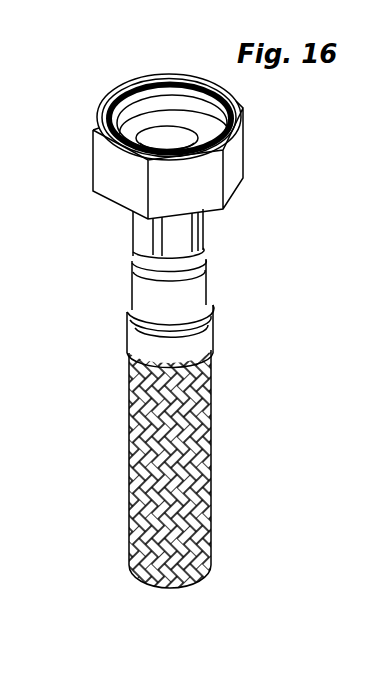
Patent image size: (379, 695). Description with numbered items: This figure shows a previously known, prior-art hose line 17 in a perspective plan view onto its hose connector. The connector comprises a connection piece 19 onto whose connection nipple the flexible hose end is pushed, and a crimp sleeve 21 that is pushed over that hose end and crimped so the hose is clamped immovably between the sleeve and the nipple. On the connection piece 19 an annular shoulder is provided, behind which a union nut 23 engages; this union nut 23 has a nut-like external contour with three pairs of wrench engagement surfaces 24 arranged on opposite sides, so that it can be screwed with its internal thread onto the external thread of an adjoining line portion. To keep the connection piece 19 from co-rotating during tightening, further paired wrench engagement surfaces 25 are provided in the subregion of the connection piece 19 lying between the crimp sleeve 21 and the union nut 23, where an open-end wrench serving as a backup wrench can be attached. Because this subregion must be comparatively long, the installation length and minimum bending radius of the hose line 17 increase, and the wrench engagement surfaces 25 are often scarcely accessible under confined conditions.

The hose line 17 is at (262, 358).
The connection piece 19 is at (168, 231).
The crimp sleeve 21 is at (200, 297).
The union nut 23 is at (238, 174).
The wrench engagement surfaces 24 is at (103, 163).
The wrench engagement surfaces 25 is at (178, 238).